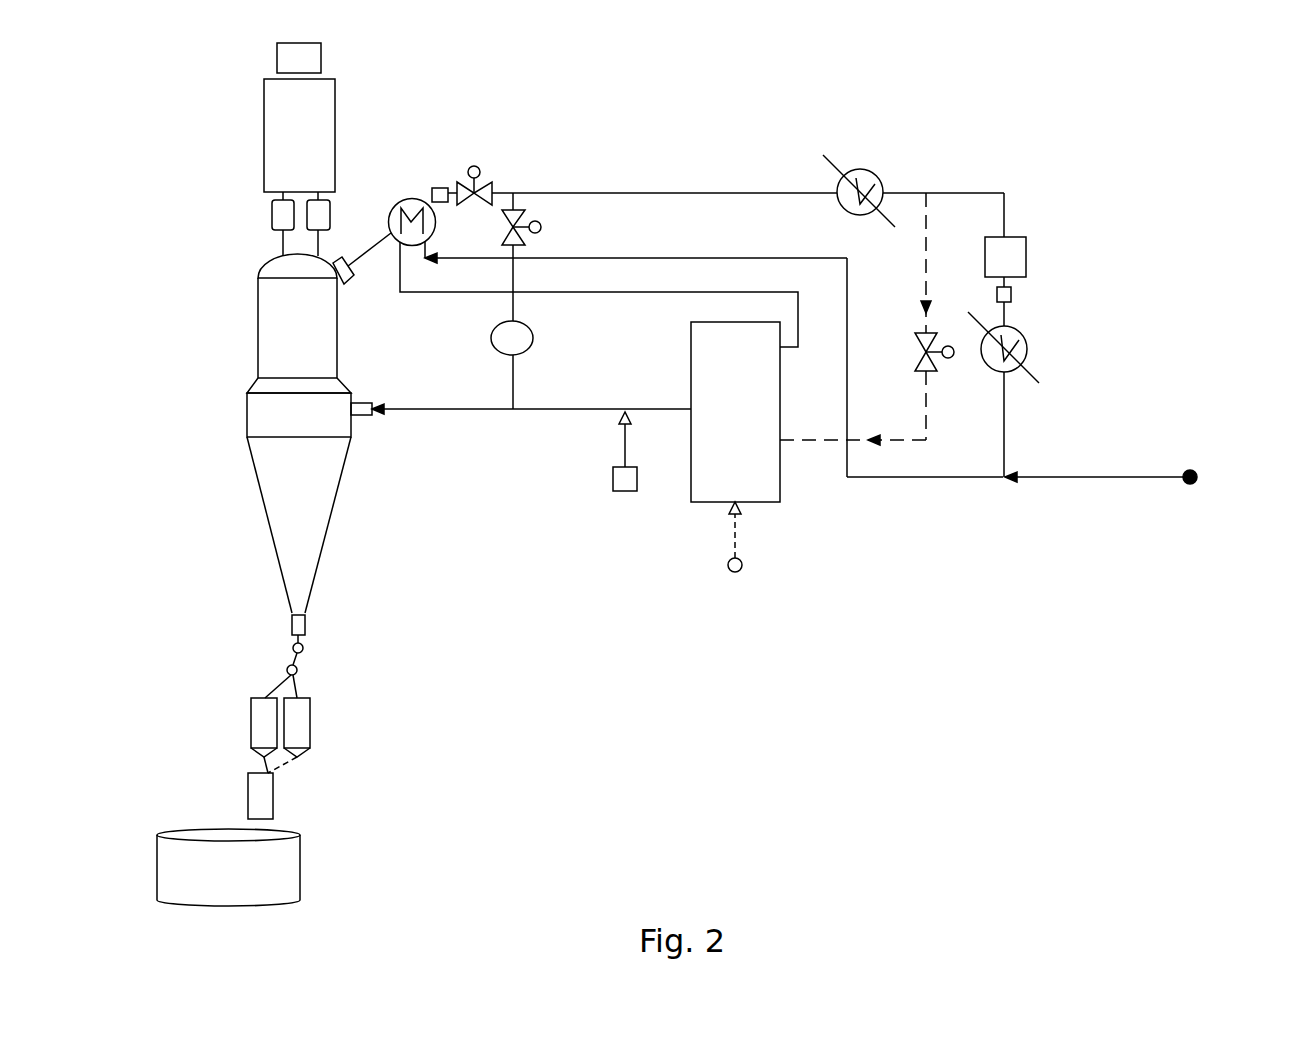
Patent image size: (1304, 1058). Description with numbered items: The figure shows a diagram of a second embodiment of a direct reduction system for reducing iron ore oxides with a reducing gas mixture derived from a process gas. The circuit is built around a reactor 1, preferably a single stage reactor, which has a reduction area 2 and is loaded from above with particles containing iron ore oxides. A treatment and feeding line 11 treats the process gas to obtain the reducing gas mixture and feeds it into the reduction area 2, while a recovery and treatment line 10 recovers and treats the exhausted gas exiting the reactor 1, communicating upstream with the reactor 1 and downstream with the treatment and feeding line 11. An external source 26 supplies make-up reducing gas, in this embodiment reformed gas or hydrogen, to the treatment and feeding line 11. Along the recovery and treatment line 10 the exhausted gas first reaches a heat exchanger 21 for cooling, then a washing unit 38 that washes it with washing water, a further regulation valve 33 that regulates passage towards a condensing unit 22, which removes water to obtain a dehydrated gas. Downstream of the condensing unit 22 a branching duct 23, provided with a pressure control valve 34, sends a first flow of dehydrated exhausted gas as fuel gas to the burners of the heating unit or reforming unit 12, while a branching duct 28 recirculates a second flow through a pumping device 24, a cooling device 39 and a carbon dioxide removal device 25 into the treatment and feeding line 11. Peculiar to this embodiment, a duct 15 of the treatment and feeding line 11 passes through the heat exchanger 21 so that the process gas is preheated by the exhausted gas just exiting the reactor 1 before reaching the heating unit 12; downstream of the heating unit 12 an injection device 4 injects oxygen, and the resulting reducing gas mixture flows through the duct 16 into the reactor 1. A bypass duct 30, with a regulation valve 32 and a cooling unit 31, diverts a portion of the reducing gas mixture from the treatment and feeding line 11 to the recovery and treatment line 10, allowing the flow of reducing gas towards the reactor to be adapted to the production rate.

The reactor 1 is at (225, 322).
The reduction area 2 is at (247, 410).
The injection device 4 is at (632, 470).
The recovery and treatment line 10 is at (666, 169).
The treatment and feeding line 11 is at (454, 426).
The heating unit or reforming unit 12 is at (775, 495).
The duct 15 is at (672, 292).
The duct 16 is at (490, 412).
The heat exchanger 21 is at (411, 198).
The condensing unit 22 is at (871, 174).
The branching duct 23 is at (928, 238).
The pumping device 24 is at (1006, 258).
The removal device 25 is at (1027, 349).
The external source 26 is at (1196, 473).
The branching duct 28 is at (971, 192).
The bypass duct 30 is at (513, 383).
The cooling unit 31 is at (526, 336).
The regulation valve 32 is at (515, 212).
The further regulation valve 33 is at (474, 166).
The pressure control valve 34 is at (920, 335).
The washing unit 38 is at (443, 188).
The cooling device 39 is at (997, 292).